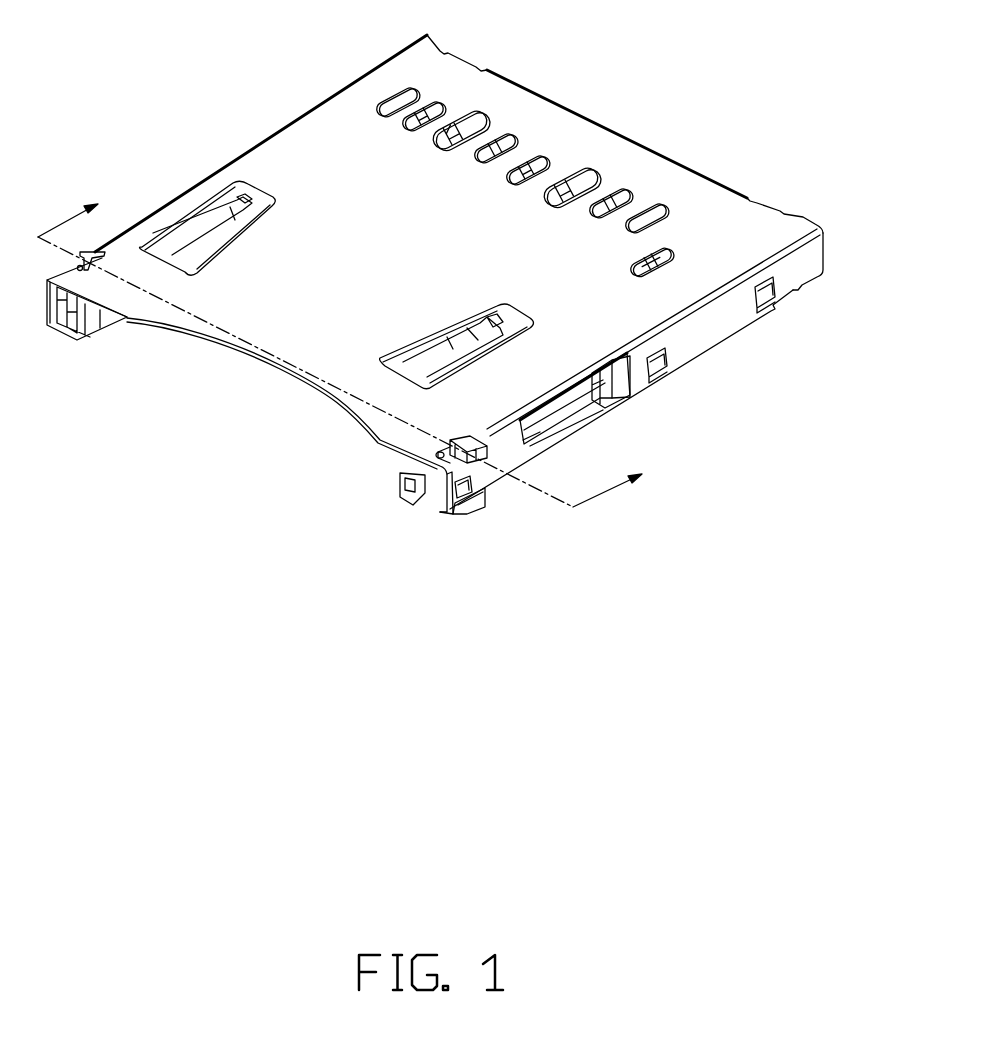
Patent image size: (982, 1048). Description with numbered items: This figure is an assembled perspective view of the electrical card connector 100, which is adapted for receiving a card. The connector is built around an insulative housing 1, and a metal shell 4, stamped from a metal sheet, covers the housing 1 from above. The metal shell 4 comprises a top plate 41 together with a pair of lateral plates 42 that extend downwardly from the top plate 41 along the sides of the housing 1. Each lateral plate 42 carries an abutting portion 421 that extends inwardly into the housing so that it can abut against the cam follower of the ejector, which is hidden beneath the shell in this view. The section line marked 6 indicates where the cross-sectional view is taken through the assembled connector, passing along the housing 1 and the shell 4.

The electrical card connector 100 is at (430, 311).
The metal shell 4 is at (459, 259).
The top plate 41 is at (459, 235).
The lateral plate 42 is at (629, 373).
The abutting portion 421 is at (567, 413).
The insulative housing 1 is at (435, 493).
The section line 6- 6 is at (350, 345).